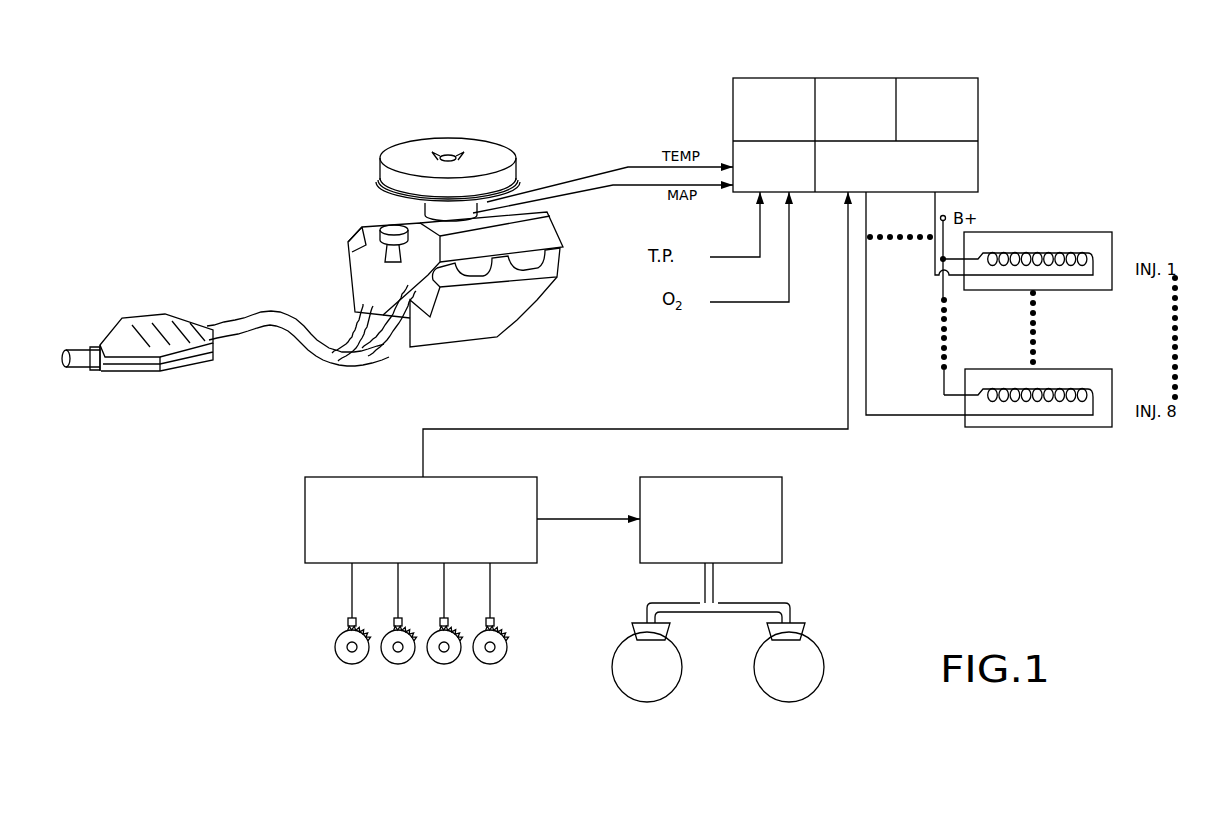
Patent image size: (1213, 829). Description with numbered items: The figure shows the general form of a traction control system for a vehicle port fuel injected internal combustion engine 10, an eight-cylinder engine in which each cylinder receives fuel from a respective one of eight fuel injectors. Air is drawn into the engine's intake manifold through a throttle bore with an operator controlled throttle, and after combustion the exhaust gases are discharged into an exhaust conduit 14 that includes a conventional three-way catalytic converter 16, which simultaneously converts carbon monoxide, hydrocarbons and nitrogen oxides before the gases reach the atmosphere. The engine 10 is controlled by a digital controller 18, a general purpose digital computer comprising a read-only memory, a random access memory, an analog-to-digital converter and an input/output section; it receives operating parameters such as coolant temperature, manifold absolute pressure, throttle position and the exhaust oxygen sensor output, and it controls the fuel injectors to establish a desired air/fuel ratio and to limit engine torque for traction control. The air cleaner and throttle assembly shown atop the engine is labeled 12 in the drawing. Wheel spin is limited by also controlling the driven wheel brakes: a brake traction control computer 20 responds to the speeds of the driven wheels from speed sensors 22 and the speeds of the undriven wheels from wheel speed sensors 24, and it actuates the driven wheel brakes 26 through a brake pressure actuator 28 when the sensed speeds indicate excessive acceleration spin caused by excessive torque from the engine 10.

The internal combustion engine 10 is at (449, 249).
The throttle body / air cleaner 12 is at (425, 212).
The exhaust conduit 14 is at (285, 320).
The three-way catalytic converter 16 is at (138, 318).
The digital controller 18 is at (835, 78).
The brake traction control computer 20 is at (367, 477).
The speed sensors 22 is at (357, 655).
The wheel speed sensors 24 is at (450, 655).
The driven wheel brakes 26 is at (668, 667).
The brake pressure actuator 28 is at (770, 508).